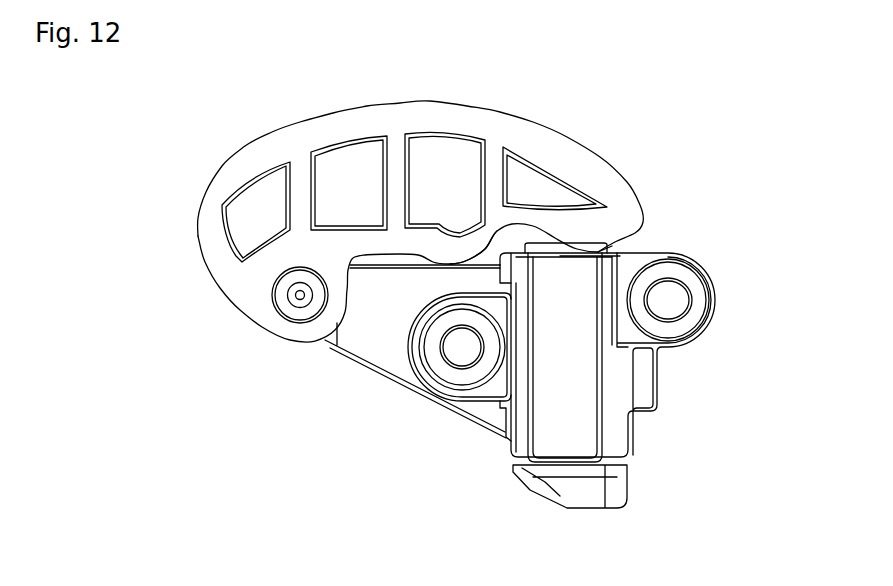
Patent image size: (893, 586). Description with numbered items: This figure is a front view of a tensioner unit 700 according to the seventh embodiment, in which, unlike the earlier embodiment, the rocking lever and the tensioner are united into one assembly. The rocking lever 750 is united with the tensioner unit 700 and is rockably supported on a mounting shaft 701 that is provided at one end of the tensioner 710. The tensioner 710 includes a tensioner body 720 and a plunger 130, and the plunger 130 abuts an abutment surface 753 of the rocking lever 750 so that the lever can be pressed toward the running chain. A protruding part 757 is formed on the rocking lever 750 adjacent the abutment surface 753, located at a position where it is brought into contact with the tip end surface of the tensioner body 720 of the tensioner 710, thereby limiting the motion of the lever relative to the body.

The tensioner unit 700 is at (163, 157).
The rocking lever 750 is at (263, 138).
The protruding part 757 is at (488, 247).
The abutment surface 753 is at (571, 253).
The plunger 130 is at (602, 243).
The tensioner body 720 is at (575, 357).
The tensioner 710 is at (460, 414).
The mounting shaft 701 is at (278, 320).